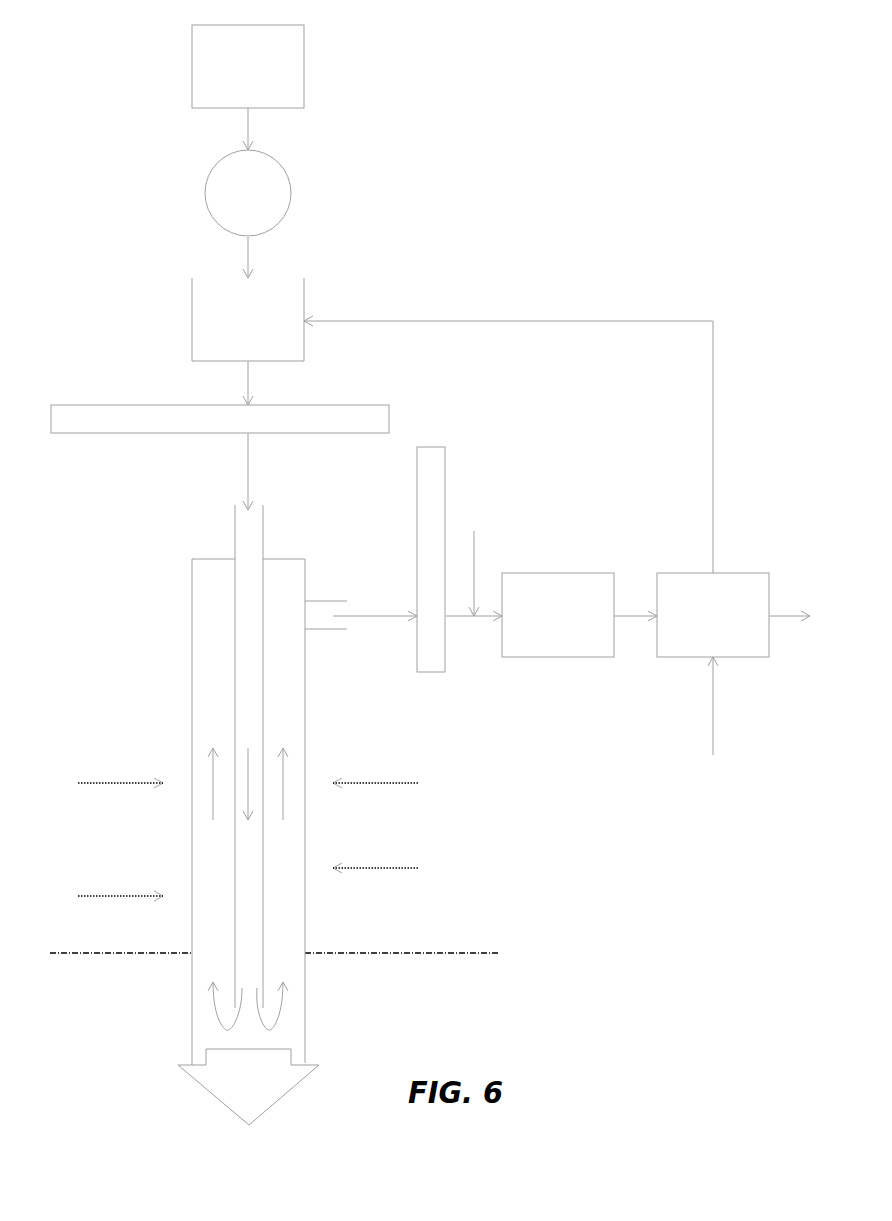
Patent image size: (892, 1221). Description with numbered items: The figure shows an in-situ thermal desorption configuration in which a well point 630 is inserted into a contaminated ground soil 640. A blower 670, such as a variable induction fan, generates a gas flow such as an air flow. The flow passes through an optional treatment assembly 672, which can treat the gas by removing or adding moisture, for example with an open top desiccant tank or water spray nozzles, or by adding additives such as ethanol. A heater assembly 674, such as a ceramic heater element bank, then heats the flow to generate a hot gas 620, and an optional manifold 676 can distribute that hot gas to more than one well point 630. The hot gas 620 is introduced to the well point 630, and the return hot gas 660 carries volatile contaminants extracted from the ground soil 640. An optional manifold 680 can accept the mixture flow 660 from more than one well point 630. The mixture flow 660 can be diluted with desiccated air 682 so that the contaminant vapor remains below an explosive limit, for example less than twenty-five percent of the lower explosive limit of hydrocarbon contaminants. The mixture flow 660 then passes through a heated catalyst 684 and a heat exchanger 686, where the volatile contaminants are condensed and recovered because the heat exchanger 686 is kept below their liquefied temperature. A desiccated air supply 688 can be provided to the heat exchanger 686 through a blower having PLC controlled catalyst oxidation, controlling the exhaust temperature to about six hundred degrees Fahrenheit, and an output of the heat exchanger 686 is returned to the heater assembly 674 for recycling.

The hot gas 620 is at (247, 488).
The well point 630 is at (172, 987).
The contaminated ground soil 640 is at (72, 700).
The return hot gas 660 is at (368, 615).
The blower 670 is at (277, 81).
The treatment assembly 672 is at (277, 203).
The heater assembly 674 is at (277, 292).
The manifold 676 is at (107, 418).
The manifold 680 is at (432, 467).
The desiccated air 682 is at (474, 550).
The heated catalyst 684 is at (572, 595).
The heat exchanger 686 is at (684, 595).
The desiccated air supply 688 is at (713, 707).